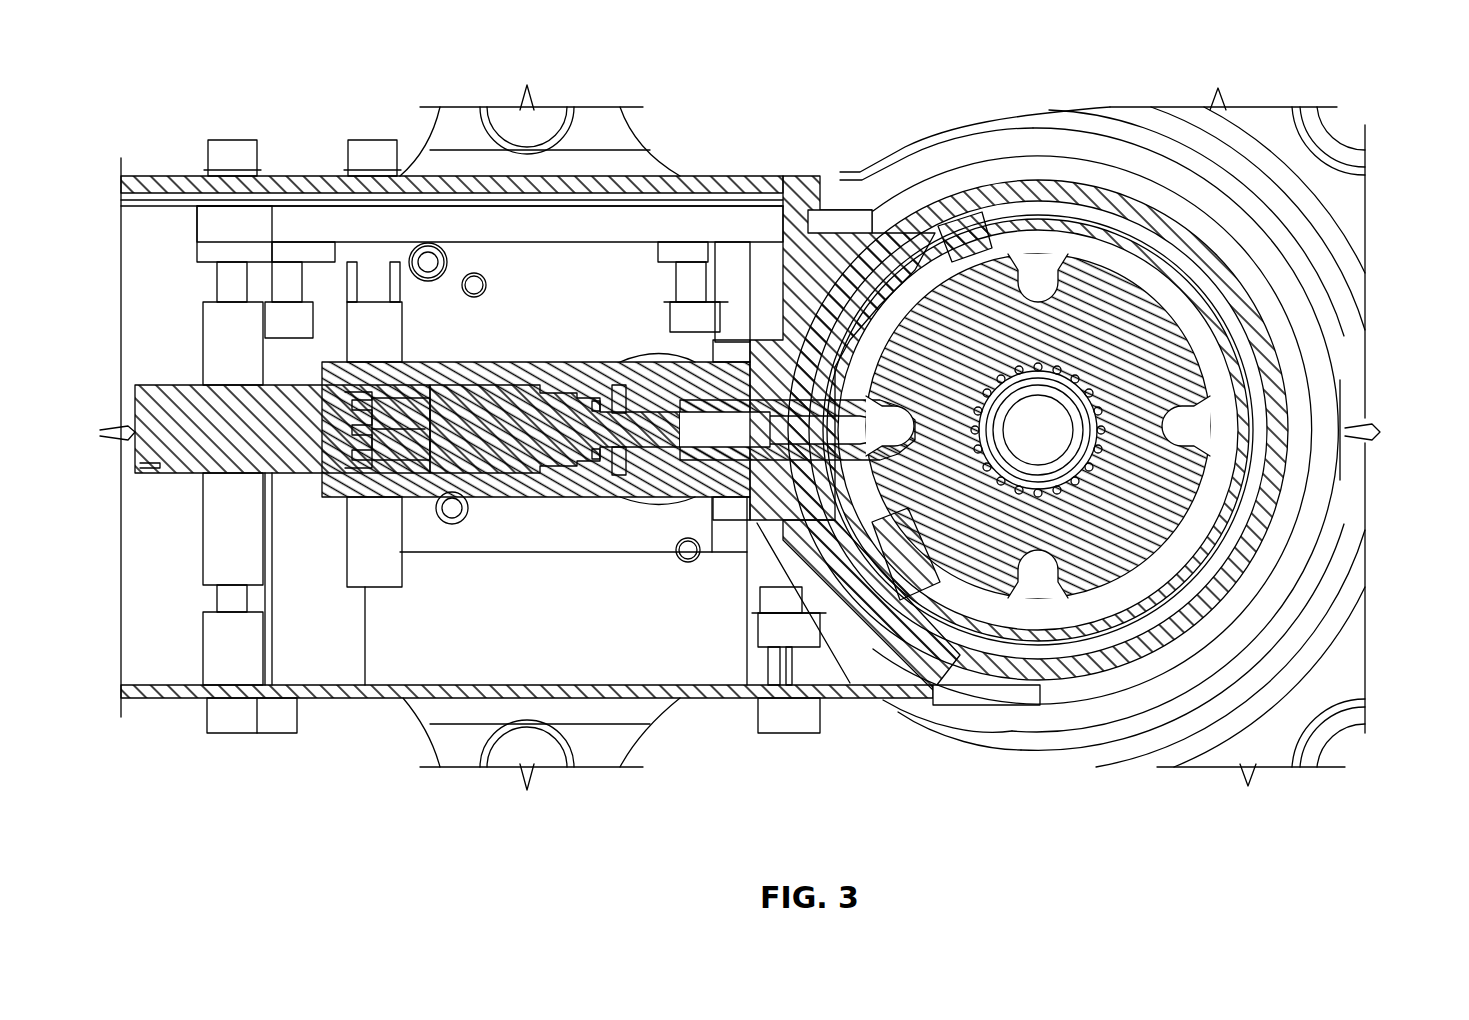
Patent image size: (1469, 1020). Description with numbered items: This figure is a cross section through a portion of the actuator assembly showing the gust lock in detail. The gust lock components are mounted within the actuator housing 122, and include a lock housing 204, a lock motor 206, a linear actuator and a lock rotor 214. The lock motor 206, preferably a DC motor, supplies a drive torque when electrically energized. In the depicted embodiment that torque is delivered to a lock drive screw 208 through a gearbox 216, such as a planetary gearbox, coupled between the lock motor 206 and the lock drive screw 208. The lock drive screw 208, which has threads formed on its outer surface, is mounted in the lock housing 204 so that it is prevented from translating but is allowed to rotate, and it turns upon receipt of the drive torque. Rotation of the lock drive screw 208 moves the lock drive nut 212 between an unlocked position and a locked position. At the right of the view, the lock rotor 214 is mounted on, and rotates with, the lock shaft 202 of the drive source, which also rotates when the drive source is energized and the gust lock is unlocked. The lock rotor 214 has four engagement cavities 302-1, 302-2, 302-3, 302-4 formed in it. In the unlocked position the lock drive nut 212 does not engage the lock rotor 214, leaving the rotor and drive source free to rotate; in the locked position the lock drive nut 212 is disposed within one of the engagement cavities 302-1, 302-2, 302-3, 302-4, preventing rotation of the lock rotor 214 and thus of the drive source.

The actuator housing 122 is at (190, 690).
The lock shaft 202 is at (1050, 441).
The lock housing 204 is at (518, 372).
The lock motor 206 is at (180, 400).
The lock drive screw 208 is at (645, 403).
The lock drive nut 212 is at (830, 405).
The lock rotor 214 is at (1167, 451).
The gearbox 216 is at (460, 450).
The engagement cavity 302-1 is at (1040, 272).
The engagement cavity 302-2 is at (1190, 425).
The engagement cavity 302-3 is at (1042, 588).
The engagement cavity 302-4 is at (915, 443).